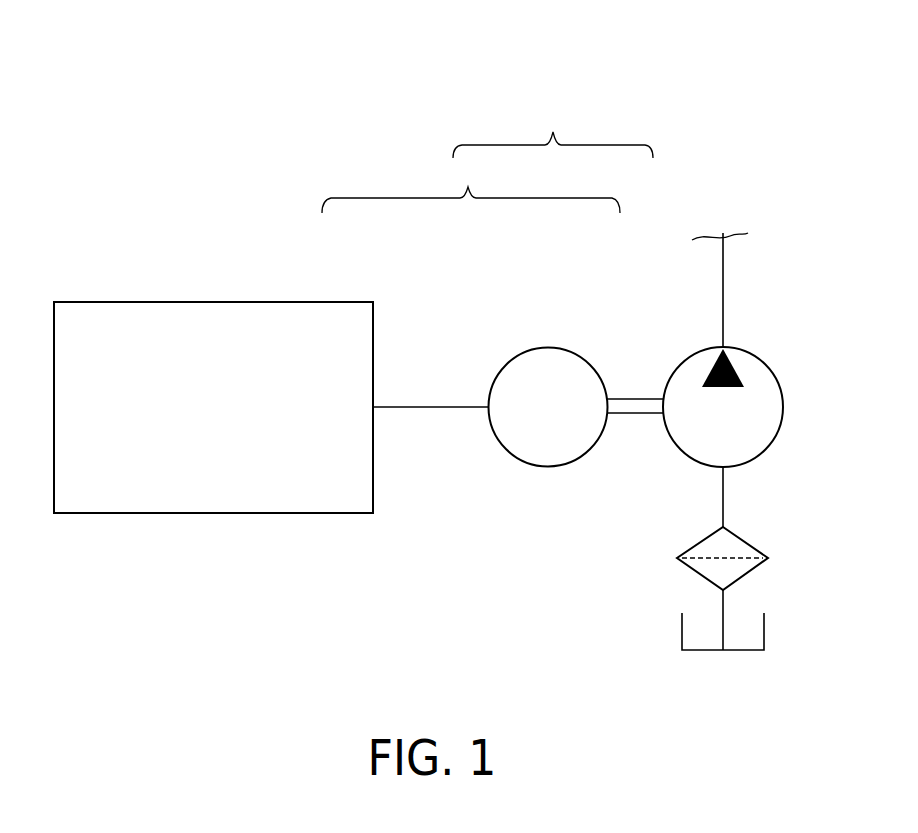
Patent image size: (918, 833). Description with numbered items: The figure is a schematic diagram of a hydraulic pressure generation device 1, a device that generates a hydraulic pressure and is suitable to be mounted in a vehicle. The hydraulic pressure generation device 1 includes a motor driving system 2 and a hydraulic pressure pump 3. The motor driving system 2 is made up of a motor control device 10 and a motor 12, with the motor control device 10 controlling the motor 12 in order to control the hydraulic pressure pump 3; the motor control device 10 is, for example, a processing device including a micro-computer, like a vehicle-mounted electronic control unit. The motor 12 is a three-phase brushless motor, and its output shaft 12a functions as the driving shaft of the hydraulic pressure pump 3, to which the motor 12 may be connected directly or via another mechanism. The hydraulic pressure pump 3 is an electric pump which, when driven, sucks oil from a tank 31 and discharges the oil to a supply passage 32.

The hydraulic pressure generation device 1 is at (560, 95).
The motor driving system 2 is at (358, 334).
The hydraulic pressure pump 3 is at (695, 349).
The motor control device 10 is at (331, 308).
The motor 12 is at (553, 348).
The output shaft 12a is at (627, 398).
The tank 31 is at (764, 632).
The supply passage 32 is at (725, 288).